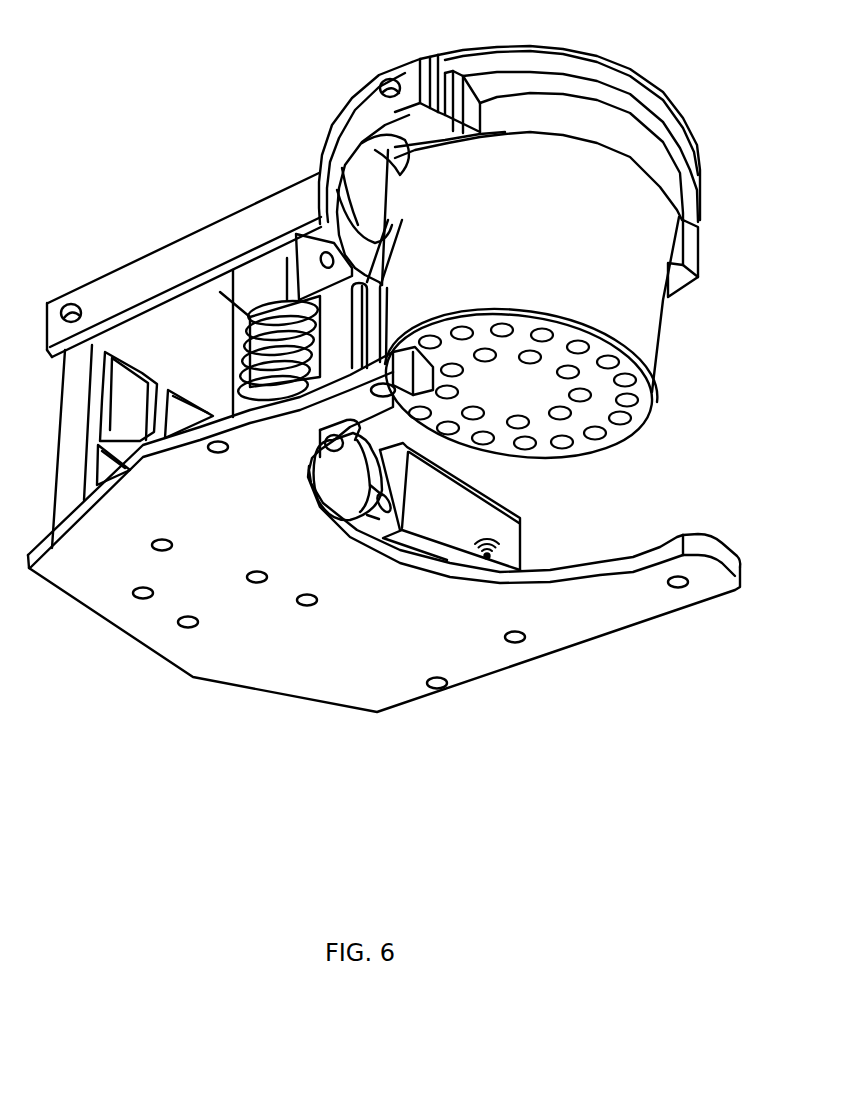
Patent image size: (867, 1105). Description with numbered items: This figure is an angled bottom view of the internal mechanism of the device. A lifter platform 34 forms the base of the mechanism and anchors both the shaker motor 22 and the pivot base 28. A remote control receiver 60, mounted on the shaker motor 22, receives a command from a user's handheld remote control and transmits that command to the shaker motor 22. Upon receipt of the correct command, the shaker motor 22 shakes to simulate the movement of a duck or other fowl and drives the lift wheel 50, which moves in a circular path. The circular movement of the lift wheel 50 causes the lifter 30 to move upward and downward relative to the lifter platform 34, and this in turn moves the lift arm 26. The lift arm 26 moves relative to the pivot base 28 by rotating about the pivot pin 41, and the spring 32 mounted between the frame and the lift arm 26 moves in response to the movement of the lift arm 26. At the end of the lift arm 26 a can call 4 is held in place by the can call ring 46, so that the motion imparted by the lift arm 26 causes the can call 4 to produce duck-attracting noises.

The can call 4 is at (529, 303).
The shaker motor 22 is at (450, 506).
The lift arm 26 is at (242, 206).
The pivot base 28 is at (186, 409).
The lifter 30 is at (345, 325).
The spring 32 is at (274, 296).
The lifter platform 34 is at (384, 529).
The pivot pin 41 is at (68, 290).
The can call ring 46 is at (547, 171).
The lift wheel 50 is at (354, 470).
The remote control receiver 60 is at (516, 548).